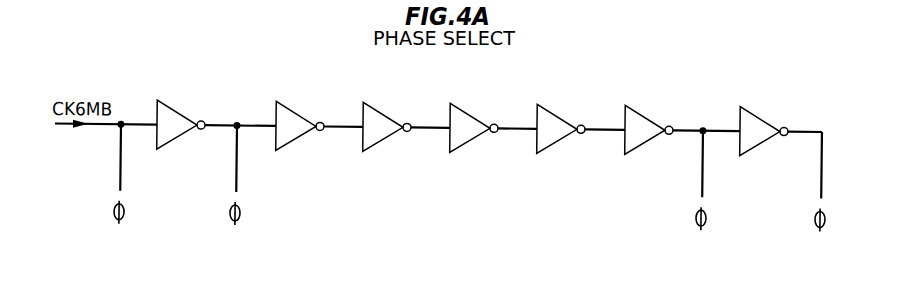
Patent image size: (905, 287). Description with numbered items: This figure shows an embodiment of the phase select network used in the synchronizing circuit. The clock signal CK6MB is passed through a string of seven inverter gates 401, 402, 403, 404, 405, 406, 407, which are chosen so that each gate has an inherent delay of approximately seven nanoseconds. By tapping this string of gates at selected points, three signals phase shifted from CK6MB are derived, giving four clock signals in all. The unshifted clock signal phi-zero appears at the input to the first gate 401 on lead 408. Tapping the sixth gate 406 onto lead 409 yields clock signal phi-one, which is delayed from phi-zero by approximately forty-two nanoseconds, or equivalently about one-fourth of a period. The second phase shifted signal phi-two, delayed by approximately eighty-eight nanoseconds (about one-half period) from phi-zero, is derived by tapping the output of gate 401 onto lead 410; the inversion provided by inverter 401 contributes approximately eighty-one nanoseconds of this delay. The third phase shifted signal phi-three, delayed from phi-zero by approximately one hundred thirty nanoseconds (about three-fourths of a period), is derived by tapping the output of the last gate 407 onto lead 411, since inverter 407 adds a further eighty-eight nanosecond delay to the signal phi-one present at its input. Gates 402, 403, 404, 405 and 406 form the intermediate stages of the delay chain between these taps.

The inverter gate 401 is at (177, 111).
The inverter gate 402 is at (296, 111).
The inverter gate 403 is at (383, 111).
The inverter gate 404 is at (470, 111).
The inverter gate 405 is at (557, 111).
The inverter gate 406 is at (645, 111).
The inverter gate 407 is at (760, 111).
The lead 408 is at (121, 167).
The lead 409 is at (703, 167).
The lead 410 is at (237, 167).
The lead 411 is at (822, 167).